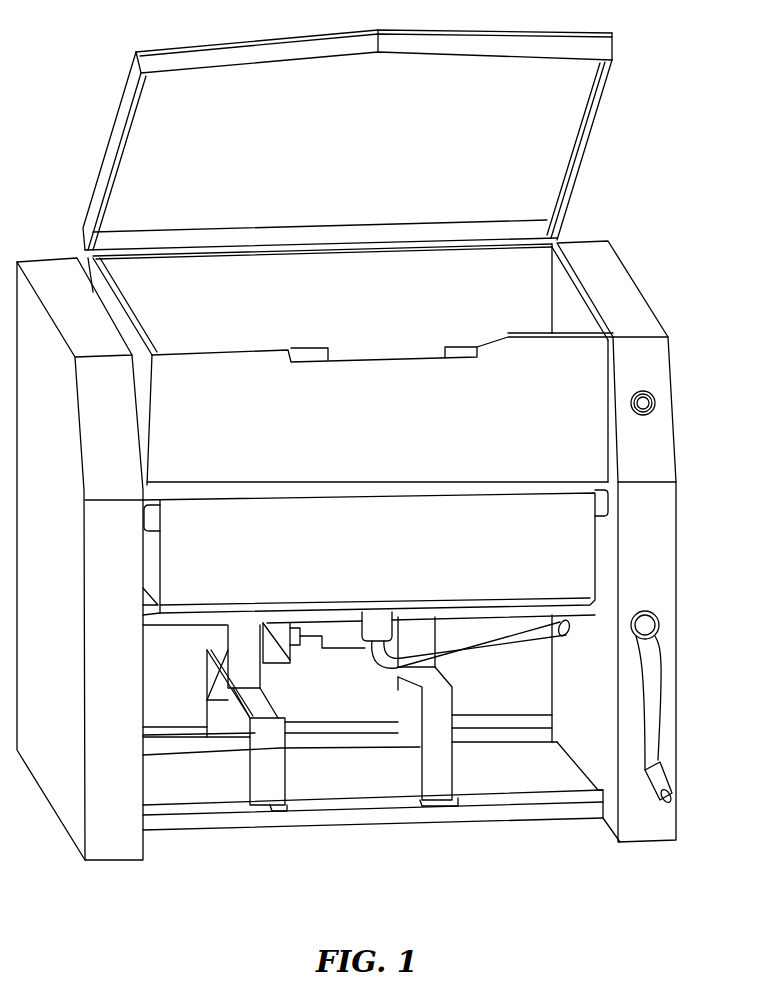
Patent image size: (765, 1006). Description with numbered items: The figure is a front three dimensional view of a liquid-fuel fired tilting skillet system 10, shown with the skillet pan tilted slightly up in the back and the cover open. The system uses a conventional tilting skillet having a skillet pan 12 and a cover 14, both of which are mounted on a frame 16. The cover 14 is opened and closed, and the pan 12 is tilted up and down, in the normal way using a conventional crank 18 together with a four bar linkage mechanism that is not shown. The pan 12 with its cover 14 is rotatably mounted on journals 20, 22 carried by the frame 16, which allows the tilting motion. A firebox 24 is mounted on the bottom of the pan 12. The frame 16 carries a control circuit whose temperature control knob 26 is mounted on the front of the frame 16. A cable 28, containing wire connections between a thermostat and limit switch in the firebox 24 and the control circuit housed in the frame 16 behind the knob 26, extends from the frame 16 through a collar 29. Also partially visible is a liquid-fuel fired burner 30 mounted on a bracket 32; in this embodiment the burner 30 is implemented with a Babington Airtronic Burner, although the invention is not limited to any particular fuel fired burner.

The liquid-fuel fired tilting skillet system 10 is at (374, 458).
The skillet pan 12 is at (353, 364).
The cover 14 is at (602, 107).
The frame 16 is at (640, 254).
The crank 18 is at (655, 598).
The journal 20 is at (148, 520).
The journal 22 is at (602, 505).
The firebox 24 is at (369, 554).
The temperature control knob 26 is at (656, 408).
The cable 28 is at (528, 660).
The collar 29 is at (373, 612).
The liquid-fuel fired burner 30 is at (316, 660).
The bracket 32 is at (322, 840).